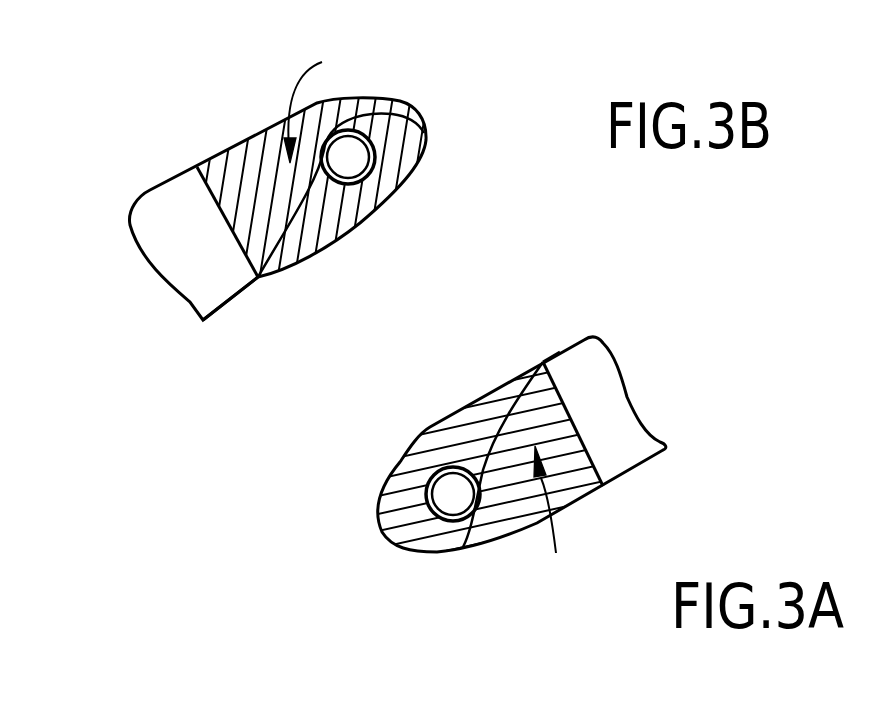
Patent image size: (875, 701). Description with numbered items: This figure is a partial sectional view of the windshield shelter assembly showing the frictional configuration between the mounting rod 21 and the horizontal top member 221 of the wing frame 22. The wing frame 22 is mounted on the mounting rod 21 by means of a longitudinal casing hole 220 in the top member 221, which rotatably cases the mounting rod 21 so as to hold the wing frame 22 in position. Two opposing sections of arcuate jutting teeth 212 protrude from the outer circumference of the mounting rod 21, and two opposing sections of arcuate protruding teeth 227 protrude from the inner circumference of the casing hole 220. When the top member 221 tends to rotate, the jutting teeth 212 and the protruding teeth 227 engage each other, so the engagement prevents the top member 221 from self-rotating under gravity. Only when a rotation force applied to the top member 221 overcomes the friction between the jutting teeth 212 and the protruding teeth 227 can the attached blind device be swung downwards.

In FIG. 3B, the mounting rod 21 is at (279, 272).
In FIG. 3A, the mounting rod 21 is at (513, 430).
In FIG. 3B, the wing frame 22 is at (195, 210).
In FIG. 3A, the wing frame 22 is at (611, 424).
In FIG. 3B, the arcuate jutting teeth 212 is at (353, 160).
In FIG. 3A, the arcuate jutting teeth 212 is at (378, 518).
In FIG. 3B, the longitudinal casing hole 220 is at (422, 114).
In FIG. 3A, the longitudinal casing hole 220 is at (463, 547).
In FIG. 3B, the horizontal top member 221 is at (342, 96).
In FIG. 3A, the horizontal top member 221 is at (559, 530).
In FIG. 3B, the arcuate protruding teeth 227 is at (265, 240).
In FIG. 3A, the arcuate protruding teeth 227 is at (530, 377).